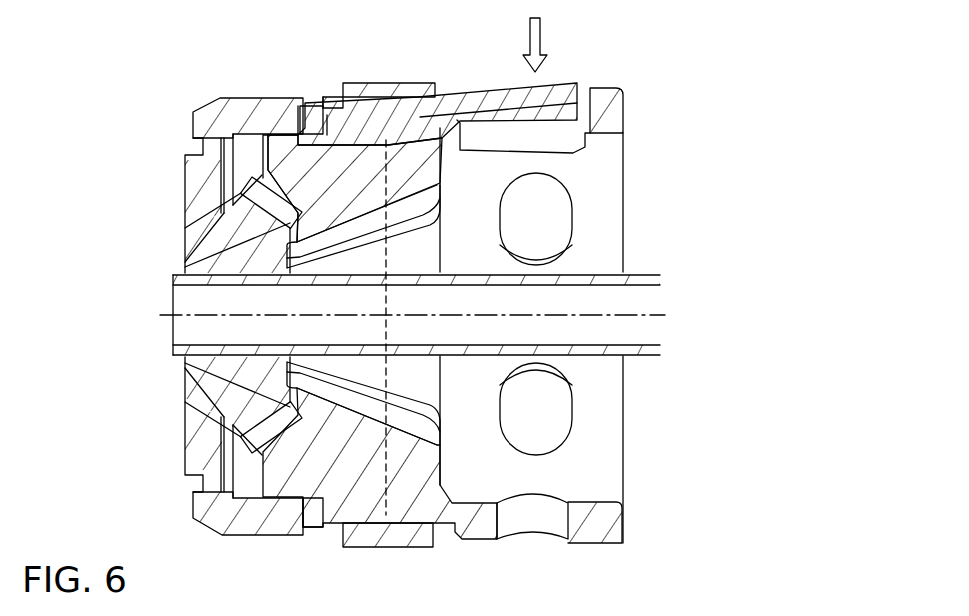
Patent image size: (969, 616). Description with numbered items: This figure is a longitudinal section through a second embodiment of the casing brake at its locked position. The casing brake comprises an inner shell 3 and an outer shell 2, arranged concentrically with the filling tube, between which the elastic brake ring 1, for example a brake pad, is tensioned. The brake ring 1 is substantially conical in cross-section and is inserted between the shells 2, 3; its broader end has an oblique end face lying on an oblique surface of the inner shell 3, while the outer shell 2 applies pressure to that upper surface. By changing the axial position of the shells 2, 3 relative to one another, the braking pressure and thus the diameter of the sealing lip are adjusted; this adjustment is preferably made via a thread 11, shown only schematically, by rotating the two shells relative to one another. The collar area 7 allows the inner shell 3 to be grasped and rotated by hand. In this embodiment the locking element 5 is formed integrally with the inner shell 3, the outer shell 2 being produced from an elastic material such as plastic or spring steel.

The elastic brake ring 1 is at (233, 405).
The outer shell 2 is at (250, 108).
The inner shell 3 is at (420, 157).
The locking element 5 is at (510, 97).
The collar area 7 is at (604, 88).
The thread 11 is at (353, 547).